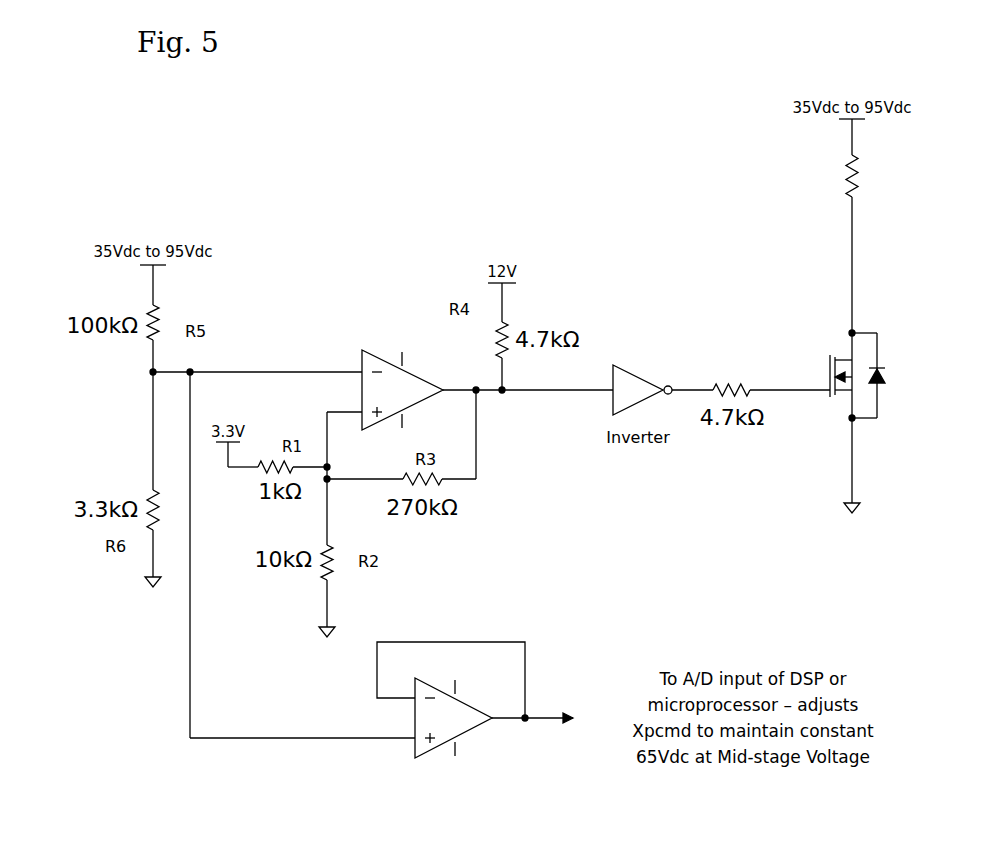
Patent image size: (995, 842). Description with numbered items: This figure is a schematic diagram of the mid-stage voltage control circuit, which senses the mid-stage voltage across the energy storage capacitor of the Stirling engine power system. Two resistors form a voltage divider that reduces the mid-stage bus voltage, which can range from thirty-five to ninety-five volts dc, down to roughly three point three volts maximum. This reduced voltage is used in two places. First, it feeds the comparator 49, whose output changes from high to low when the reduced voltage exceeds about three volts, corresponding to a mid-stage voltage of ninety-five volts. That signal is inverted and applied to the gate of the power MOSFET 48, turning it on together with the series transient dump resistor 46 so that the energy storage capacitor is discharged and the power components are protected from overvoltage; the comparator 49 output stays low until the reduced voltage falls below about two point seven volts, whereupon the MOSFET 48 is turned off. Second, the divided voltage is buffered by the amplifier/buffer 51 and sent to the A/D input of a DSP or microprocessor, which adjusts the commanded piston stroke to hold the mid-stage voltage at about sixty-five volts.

The transient dump resistor 46 is at (858, 178).
The power MOSFET 48 is at (829, 368).
The comparator 49 is at (362, 383).
The amplifier/buffer 51 is at (478, 725).